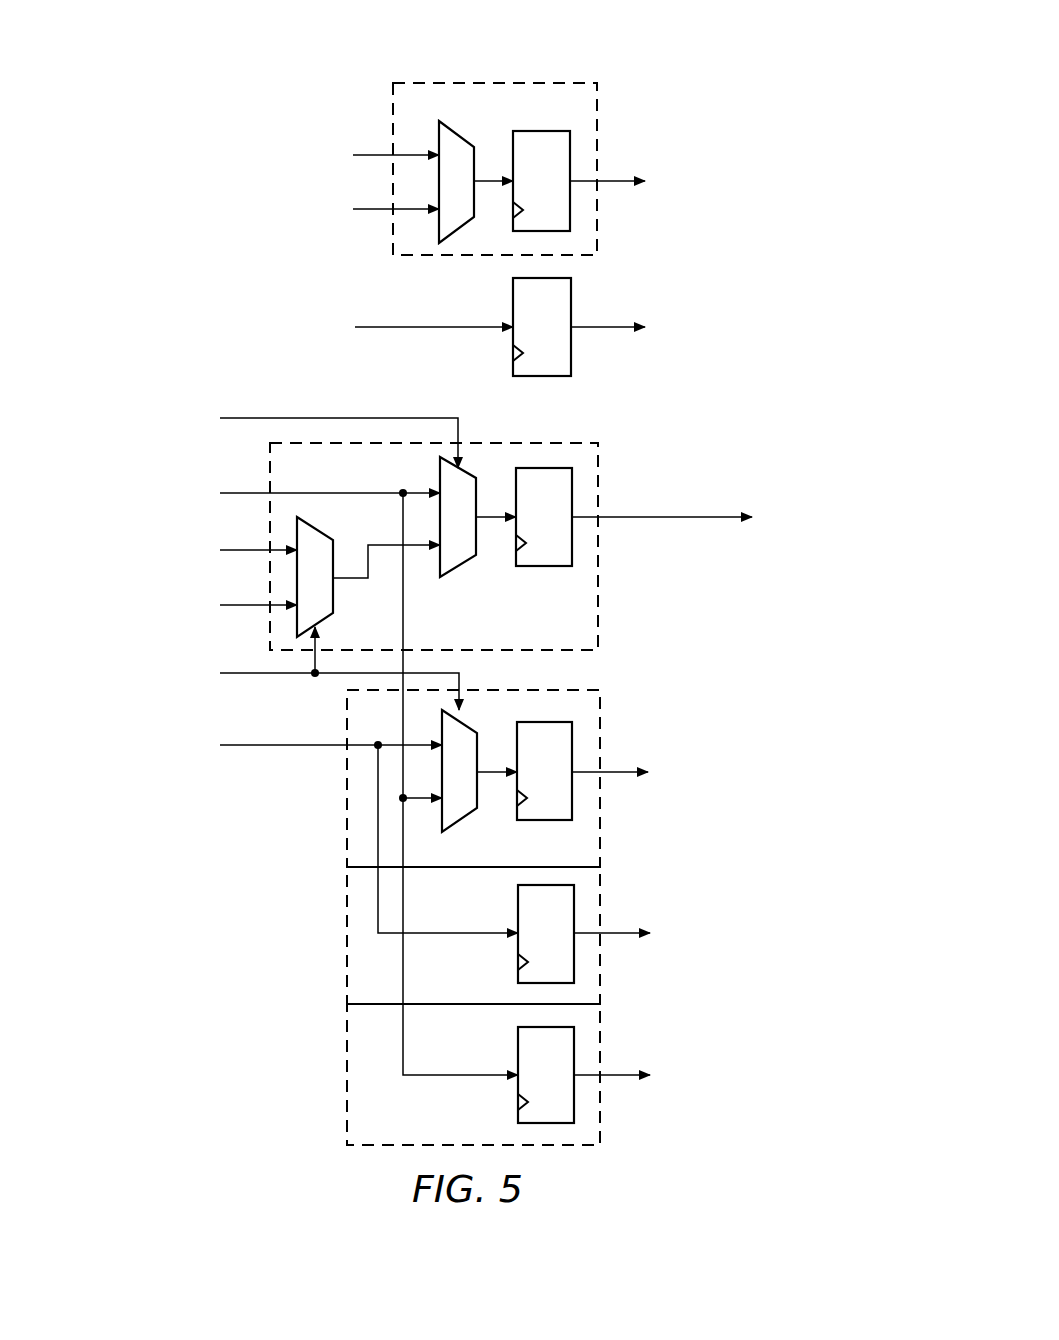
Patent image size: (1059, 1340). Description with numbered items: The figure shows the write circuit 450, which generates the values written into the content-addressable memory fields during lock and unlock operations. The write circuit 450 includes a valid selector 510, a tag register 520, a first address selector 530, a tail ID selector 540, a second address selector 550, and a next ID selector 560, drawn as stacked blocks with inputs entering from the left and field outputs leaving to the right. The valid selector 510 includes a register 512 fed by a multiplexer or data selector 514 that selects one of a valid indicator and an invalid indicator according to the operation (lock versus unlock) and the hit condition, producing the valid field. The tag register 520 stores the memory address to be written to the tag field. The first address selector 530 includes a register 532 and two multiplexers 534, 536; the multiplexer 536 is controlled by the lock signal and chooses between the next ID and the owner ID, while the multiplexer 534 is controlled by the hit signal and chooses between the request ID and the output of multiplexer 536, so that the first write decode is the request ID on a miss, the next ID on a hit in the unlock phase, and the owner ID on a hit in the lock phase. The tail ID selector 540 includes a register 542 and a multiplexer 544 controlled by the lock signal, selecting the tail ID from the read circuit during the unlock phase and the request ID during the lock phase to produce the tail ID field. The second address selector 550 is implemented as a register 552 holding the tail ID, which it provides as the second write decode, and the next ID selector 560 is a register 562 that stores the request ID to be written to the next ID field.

The write circuit 450 is at (718, 42).
The valid selector 510 is at (597, 232).
The register 512 is at (557, 138).
The multiplexer or data selector 514 is at (460, 138).
The tag register 520 is at (560, 294).
The first address selector 530 is at (598, 605).
The register 532 is at (555, 557).
The multiplexer or data selector 534 is at (462, 557).
The multiplexer or data selector 536 is at (333, 602).
The tail ID selector 540 is at (346, 801).
The register 542 is at (555, 813).
The multiplexer or data selector 544 is at (457, 813).
The second address selector 550 is at (347, 954).
The register 552 is at (523, 897).
The next ID selector 560 is at (347, 1095).
The register 562 is at (523, 1042).